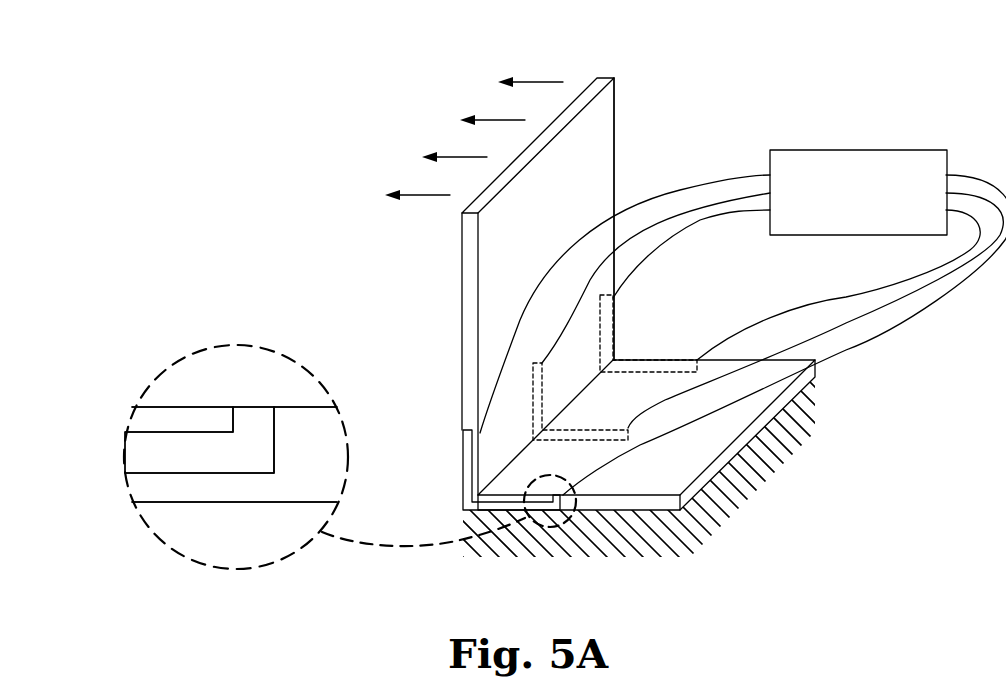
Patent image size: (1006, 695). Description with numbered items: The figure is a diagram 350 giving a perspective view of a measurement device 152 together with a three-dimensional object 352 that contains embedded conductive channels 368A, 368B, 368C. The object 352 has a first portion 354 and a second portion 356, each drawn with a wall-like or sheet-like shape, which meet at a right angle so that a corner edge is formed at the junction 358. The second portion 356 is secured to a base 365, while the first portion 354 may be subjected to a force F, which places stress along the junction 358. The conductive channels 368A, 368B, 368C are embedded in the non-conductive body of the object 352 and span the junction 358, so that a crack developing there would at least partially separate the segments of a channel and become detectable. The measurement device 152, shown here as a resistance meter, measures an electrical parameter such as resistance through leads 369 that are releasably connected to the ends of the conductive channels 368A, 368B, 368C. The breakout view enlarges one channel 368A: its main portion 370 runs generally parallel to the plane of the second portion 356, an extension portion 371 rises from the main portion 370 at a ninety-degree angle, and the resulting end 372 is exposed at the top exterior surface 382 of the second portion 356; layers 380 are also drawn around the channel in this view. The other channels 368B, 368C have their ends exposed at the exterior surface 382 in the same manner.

The diagram 350 is at (232, 121).
The 3D object 352 is at (640, 122).
The first portion 354 is at (608, 148).
The second portion 356 is at (782, 372).
The junction 358 is at (463, 508).
The base 365 is at (643, 553).
The conductive channel 368A is at (463, 460).
The conductive channel 368B is at (588, 440).
The conductive channel 368C is at (663, 363).
The leads 369 is at (720, 177).
The main portion 370 is at (128, 450).
The extension portion 371 is at (263, 428).
The end 372 is at (253, 405).
The insulating layers 380 is at (130, 412).
The top exterior surface 382 is at (689, 468).
The measurement device 152 is at (858, 150).